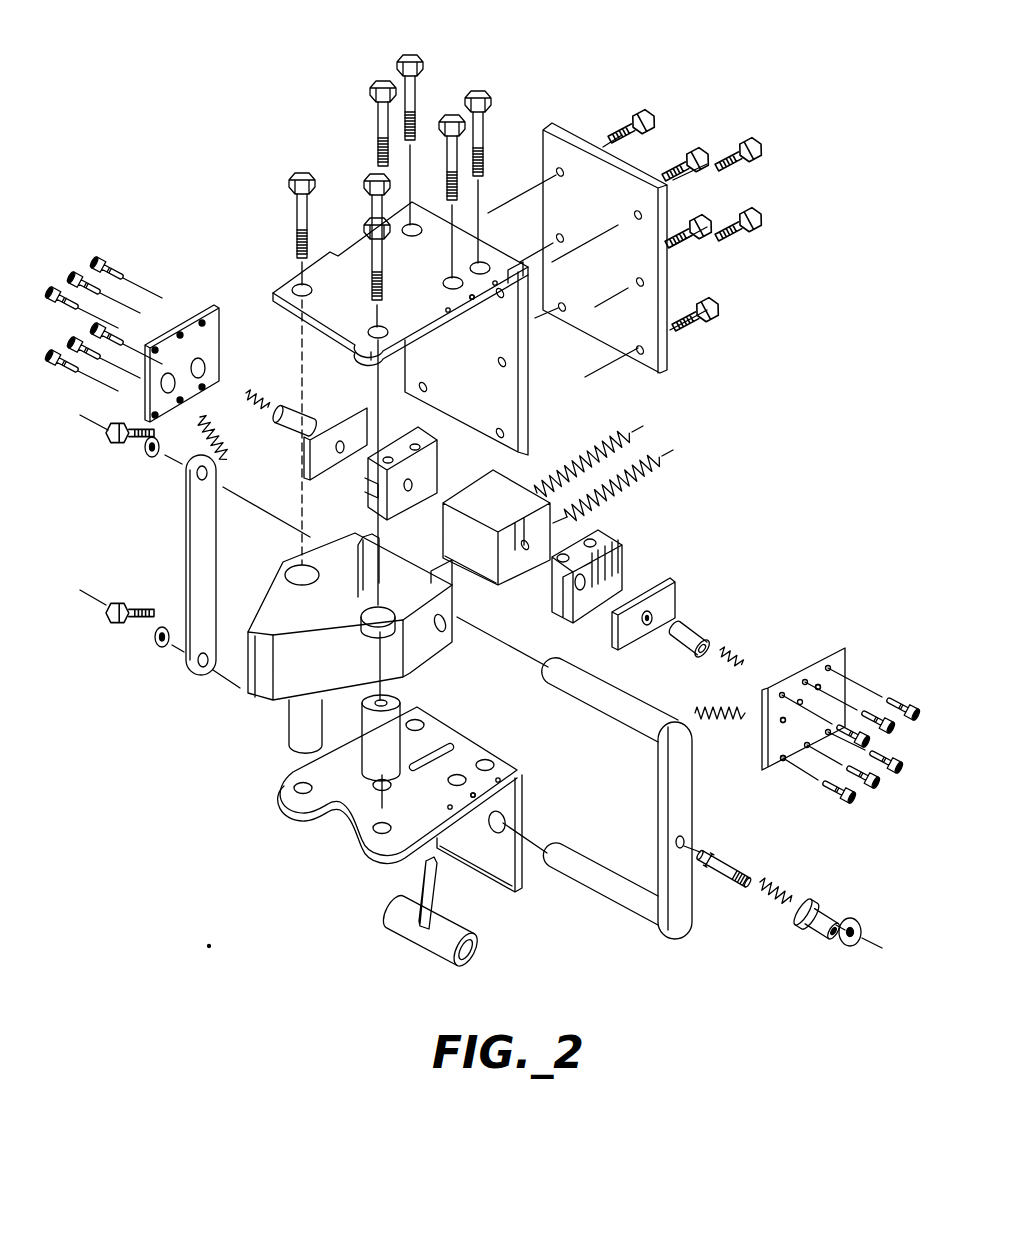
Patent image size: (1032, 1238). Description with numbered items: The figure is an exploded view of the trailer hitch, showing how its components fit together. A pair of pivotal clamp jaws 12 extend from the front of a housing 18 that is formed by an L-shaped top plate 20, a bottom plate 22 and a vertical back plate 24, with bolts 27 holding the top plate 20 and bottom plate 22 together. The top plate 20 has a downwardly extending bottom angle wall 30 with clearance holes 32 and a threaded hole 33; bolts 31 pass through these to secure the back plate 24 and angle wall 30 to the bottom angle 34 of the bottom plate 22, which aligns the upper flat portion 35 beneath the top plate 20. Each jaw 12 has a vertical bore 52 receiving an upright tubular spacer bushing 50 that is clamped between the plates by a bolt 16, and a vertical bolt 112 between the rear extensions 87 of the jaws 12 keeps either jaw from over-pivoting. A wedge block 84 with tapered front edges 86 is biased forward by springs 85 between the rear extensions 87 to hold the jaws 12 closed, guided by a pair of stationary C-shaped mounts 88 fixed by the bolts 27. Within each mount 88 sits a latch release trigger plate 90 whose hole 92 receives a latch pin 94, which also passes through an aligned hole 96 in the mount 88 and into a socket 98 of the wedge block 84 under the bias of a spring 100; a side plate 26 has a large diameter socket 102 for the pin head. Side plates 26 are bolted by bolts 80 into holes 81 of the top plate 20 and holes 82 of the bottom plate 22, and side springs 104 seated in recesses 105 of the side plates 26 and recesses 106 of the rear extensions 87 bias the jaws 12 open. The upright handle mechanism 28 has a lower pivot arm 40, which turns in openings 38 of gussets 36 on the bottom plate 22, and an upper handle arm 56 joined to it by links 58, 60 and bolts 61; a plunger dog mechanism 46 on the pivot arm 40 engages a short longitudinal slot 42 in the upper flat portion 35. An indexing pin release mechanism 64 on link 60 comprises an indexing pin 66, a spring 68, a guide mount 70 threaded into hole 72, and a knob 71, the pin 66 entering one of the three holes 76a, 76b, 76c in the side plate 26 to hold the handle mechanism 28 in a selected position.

The clamp jaw 12 is at (292, 707).
The bolt 16 is at (335, 270).
The housing 18 is at (342, 180).
The top plate 20 is at (352, 254).
The bottom plate 22 is at (347, 802).
The back plate 24 is at (545, 142).
The side plate 26 is at (218, 320).
The bolt 27 is at (478, 84).
The handle mechanism 28 is at (710, 812).
The bottom angle wall 30 is at (520, 427).
The bolt 31 is at (716, 134).
The clearance hole 32 is at (636, 216).
The threaded hole 33 is at (502, 298).
The bottom angle 34 is at (526, 800).
The upper flat portion 35 is at (435, 725).
The gusset 36 is at (492, 850).
The opening 38 is at (520, 830).
The pivot arm 40 is at (606, 896).
The longitudinal slot 42 is at (448, 745).
The plunger dog mechanism 46 is at (424, 866).
The spacer bushing 50 is at (378, 752).
The vertical bore 52 is at (300, 565).
The handle arm 56 is at (606, 712).
The link 58 is at (192, 573).
The link 60 is at (690, 936).
The bolt 61 is at (120, 444).
The indexing pin release mechanism 64 is at (850, 904).
The indexing pin 66 is at (720, 862).
The spring 68 is at (770, 884).
The guide mount 70 is at (816, 930).
The knob 71 is at (866, 930).
The threaded hole 72 is at (676, 838).
The hole 76a is at (784, 722).
The hole 76b is at (778, 760).
The hole 76c is at (822, 689).
The bolt 80 is at (70, 262).
The hole 81 is at (481, 318).
The hole 82 is at (467, 822).
The wedge block 84 is at (492, 496).
The biasing spring 85 is at (660, 456).
The tapered front edge 86 is at (496, 580).
The rear extension 87 is at (360, 538).
The C-shaped mount 88 is at (378, 492).
The latch release trigger plate 90 is at (320, 478).
The hole 92 is at (338, 440).
The latch pin 94 is at (290, 432).
The aligned hole 96 is at (410, 492).
The socket 98 is at (527, 556).
The spring 100 is at (247, 394).
The socket 102 is at (204, 366).
The side spring 104 is at (222, 440).
The recess 105 is at (170, 392).
The recess 106 is at (444, 630).
The vertical bolt 112 is at (377, 176).